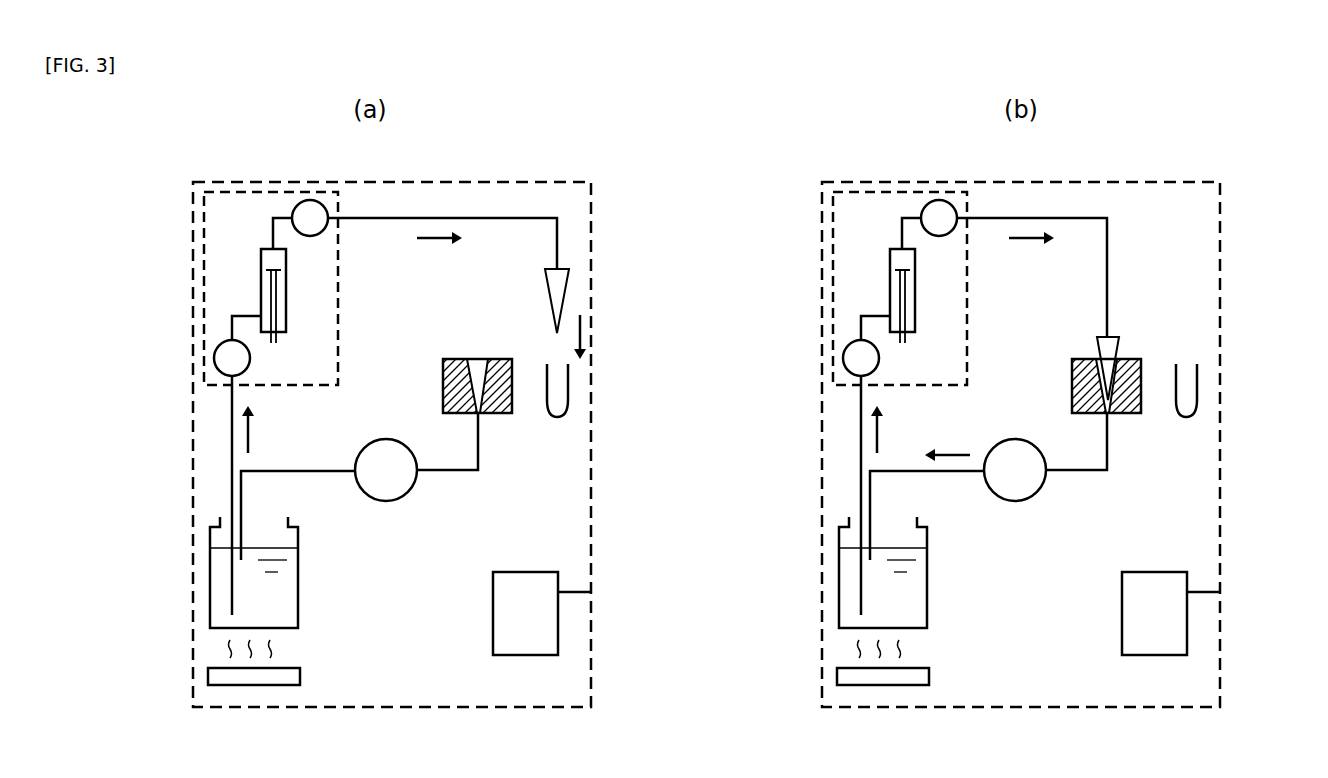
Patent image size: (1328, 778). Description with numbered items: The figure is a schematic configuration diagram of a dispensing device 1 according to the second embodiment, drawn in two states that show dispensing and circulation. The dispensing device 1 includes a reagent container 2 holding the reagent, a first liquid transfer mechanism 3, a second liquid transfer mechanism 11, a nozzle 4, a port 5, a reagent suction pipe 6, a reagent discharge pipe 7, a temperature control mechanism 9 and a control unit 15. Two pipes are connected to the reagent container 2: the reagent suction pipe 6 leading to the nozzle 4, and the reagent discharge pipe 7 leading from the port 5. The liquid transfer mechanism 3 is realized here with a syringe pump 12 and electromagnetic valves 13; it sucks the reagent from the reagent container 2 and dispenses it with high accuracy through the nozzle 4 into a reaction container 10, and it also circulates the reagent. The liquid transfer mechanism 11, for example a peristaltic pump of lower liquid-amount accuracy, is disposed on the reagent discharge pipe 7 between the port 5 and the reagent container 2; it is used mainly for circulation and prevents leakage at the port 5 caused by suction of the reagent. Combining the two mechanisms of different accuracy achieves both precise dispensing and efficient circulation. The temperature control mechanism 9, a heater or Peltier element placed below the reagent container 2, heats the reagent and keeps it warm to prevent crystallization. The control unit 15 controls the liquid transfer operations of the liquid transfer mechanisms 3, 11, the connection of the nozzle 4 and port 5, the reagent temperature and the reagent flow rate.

The dispensing device 1 is at (193, 203).
The reagent container 2 is at (210, 581).
The liquid transfer mechanism 3 is at (204, 323).
The nozzle 4 is at (545, 297).
The port 5 is at (443, 378).
The reagent suction pipe 6 is at (231, 467).
The reagent discharge pipe 7 is at (242, 490).
The temperature control mechanism 9 is at (208, 678).
The reaction container 10 is at (568, 383).
The liquid transfer mechanism 11 is at (408, 497).
The syringe pump 12 is at (256, 261).
The electromagnetic valve 13 is at (323, 231).
The control unit 15 is at (493, 605).